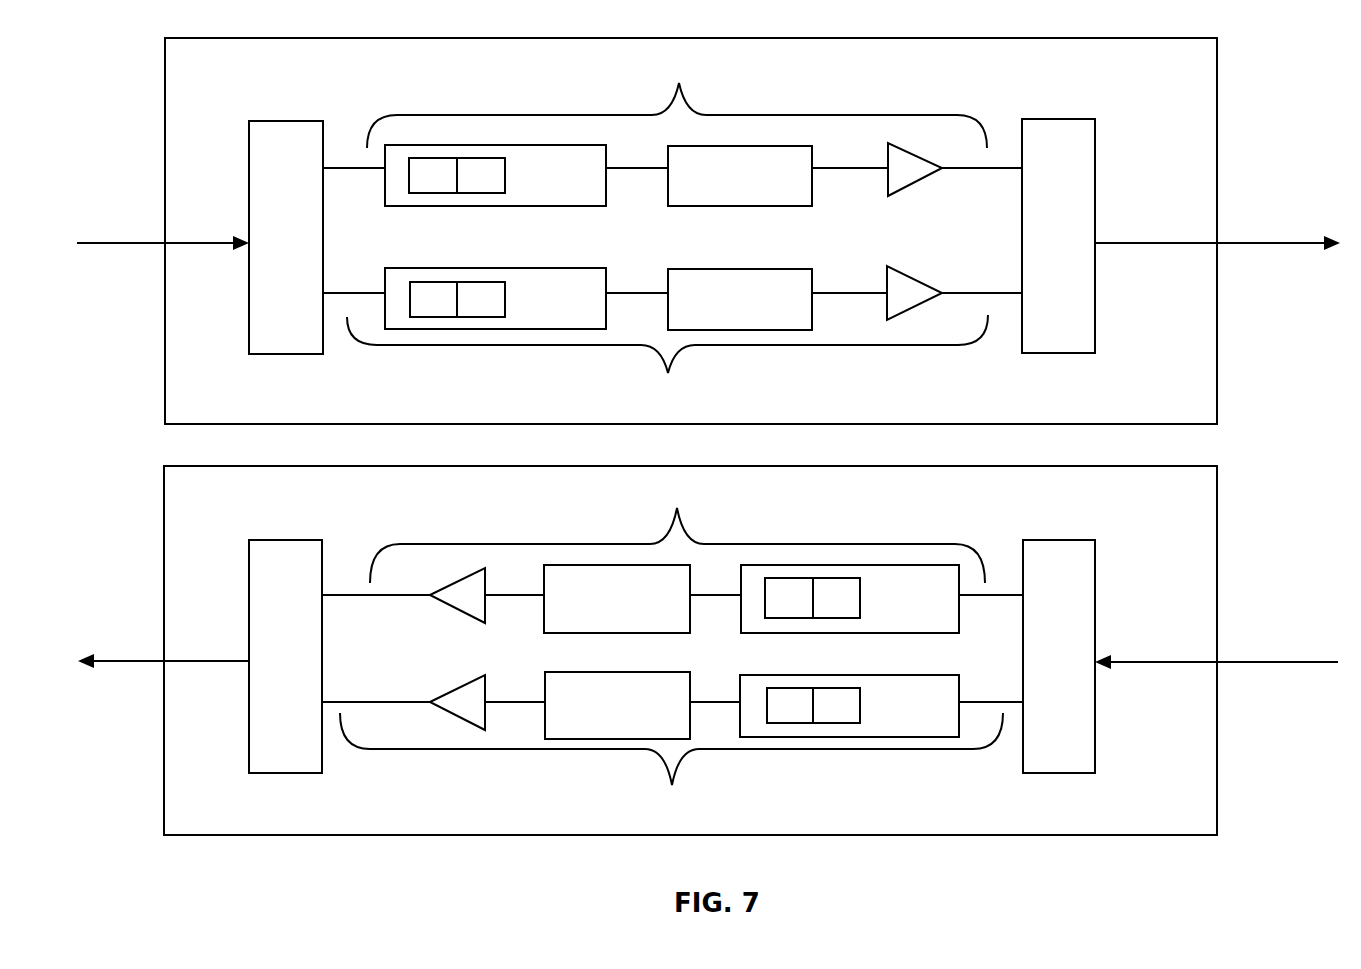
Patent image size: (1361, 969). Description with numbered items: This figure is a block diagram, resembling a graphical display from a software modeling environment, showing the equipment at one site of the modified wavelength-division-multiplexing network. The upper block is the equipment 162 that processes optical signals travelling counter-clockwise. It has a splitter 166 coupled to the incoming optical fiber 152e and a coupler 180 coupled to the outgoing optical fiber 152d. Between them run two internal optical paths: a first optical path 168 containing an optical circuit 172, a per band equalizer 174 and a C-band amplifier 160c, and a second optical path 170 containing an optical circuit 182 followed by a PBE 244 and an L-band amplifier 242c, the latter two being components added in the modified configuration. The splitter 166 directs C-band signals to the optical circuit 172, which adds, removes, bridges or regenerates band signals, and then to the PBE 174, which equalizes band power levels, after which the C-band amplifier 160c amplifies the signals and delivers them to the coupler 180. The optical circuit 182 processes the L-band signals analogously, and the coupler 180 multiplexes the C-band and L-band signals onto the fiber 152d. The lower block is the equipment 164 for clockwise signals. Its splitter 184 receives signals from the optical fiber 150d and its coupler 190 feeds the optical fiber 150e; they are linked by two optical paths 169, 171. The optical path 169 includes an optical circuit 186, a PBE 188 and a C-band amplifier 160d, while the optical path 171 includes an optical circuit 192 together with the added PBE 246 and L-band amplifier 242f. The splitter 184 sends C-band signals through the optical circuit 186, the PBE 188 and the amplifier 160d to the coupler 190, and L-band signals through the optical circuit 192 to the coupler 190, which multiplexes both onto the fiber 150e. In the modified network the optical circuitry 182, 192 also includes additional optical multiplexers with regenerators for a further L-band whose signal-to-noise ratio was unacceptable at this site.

The equipment 162 is at (1157, 74).
The equipment 164 is at (1158, 496).
The optical fiber 152e is at (147, 238).
The optical fiber 152d is at (1296, 235).
The optical fiber 150e is at (139, 655).
The optical fiber 150d is at (1263, 653).
The splitter 166 is at (275, 347).
The coupler 180 is at (1047, 346).
The splitter 184 is at (1048, 767).
The coupler 190 is at (272, 766).
The first band path 168 is at (677, 103).
The second band path 170 is at (667, 363).
The optical path 169 is at (677, 532).
The optical path 171 is at (671, 770).
The optical circuit 172 is at (543, 200).
The optical circuit 182 is at (544, 324).
The optical circuit 186 is at (899, 622).
The optical circuit 192 is at (899, 729).
The per band equalizer (PBE) 174 is at (765, 199).
The PBE 244 is at (765, 323).
The PBE 188 is at (642, 622).
The PBE 246 is at (642, 729).
The C-band amplifier 160c is at (925, 185).
The C-band amplifier 160d is at (440, 612).
The L-band amplifier 242c is at (877, 280).
The L-band amplifier 242f is at (455, 682).